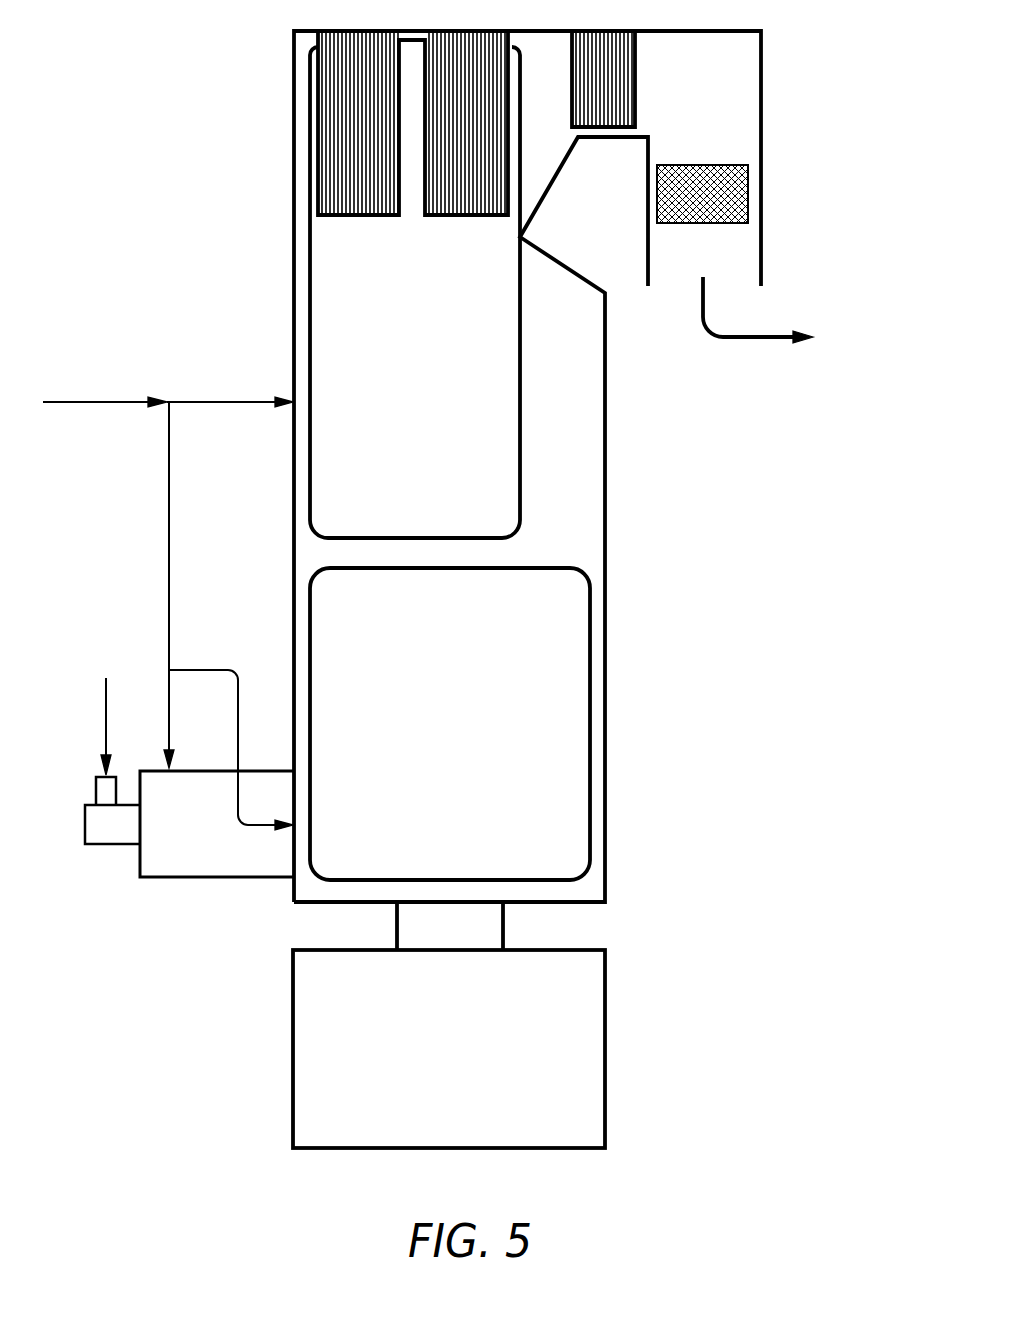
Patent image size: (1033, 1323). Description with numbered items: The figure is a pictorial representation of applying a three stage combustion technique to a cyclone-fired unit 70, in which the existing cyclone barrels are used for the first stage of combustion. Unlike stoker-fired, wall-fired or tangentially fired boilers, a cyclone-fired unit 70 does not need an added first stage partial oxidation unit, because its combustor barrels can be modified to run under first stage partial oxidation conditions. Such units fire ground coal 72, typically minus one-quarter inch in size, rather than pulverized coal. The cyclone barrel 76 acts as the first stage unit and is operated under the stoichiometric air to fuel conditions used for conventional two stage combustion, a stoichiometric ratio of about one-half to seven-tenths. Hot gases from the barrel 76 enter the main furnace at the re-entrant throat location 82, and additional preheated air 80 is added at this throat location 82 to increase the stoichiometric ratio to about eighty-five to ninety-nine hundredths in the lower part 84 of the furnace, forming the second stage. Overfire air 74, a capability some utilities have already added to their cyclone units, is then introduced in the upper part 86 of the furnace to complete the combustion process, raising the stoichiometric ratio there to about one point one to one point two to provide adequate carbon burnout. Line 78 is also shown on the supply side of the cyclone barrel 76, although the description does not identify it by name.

The cyclone-fired unit 70 is at (690, 513).
The ground coal 72 is at (103, 708).
The overfire air 74 is at (218, 400).
The cyclone barrel 76 is at (207, 878).
The air branch line 78 is at (172, 698).
The preheated air 80 is at (78, 403).
The re-entrant throat location 82 is at (238, 710).
The lower part of the furnace 84 is at (463, 741).
The upper part of the furnace 86 is at (428, 363).